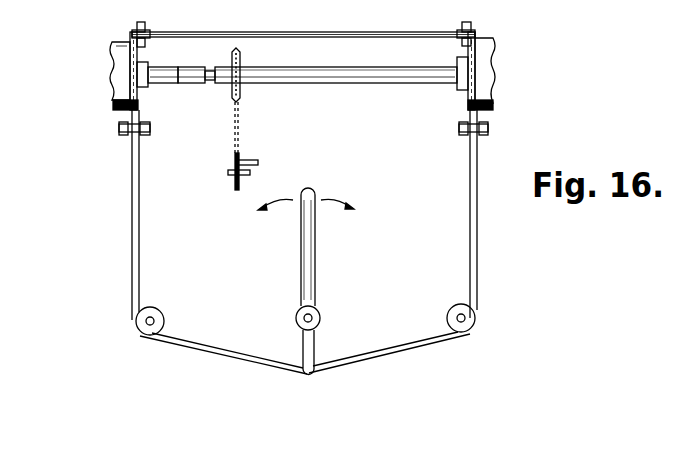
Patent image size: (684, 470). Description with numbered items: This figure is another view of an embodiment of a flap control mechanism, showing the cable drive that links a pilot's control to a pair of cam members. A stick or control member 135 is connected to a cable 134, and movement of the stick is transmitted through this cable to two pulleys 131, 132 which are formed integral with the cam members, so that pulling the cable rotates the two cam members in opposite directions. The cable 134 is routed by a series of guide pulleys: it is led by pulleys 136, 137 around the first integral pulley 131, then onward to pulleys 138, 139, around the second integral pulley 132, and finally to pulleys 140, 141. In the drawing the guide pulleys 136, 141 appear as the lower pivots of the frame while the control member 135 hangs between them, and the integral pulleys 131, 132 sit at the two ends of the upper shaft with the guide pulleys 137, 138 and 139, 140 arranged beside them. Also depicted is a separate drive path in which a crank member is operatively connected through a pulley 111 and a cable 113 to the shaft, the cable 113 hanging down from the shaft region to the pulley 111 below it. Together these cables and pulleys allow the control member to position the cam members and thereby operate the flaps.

The pulley 111 is at (236, 186).
The cable 113 is at (238, 128).
The pulley 131 is at (113, 45).
The pulley 132 is at (482, 104).
The cable 134 is at (398, 12).
The stick or control member 135 is at (309, 252).
The pulley 136 is at (162, 311).
The pulley 137 is at (145, 136).
The pulley 138 is at (148, 32).
The pulley 139 is at (475, 32).
The pulley 140 is at (479, 138).
The pulley 141 is at (475, 321).